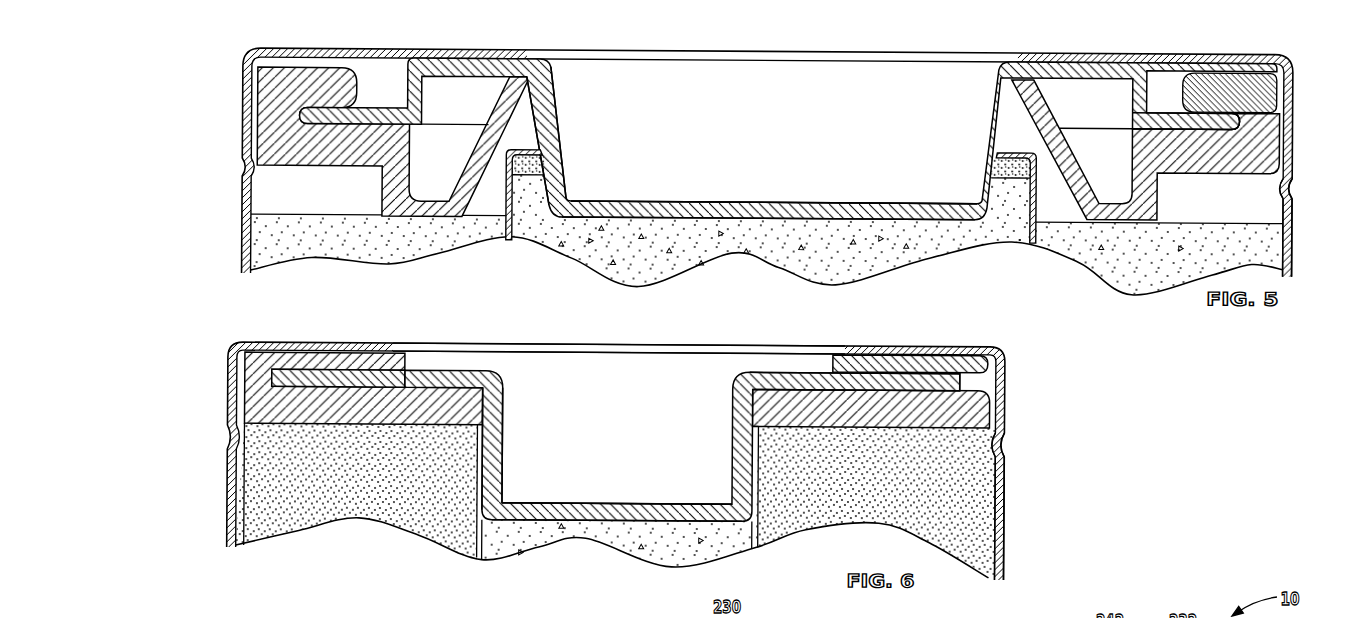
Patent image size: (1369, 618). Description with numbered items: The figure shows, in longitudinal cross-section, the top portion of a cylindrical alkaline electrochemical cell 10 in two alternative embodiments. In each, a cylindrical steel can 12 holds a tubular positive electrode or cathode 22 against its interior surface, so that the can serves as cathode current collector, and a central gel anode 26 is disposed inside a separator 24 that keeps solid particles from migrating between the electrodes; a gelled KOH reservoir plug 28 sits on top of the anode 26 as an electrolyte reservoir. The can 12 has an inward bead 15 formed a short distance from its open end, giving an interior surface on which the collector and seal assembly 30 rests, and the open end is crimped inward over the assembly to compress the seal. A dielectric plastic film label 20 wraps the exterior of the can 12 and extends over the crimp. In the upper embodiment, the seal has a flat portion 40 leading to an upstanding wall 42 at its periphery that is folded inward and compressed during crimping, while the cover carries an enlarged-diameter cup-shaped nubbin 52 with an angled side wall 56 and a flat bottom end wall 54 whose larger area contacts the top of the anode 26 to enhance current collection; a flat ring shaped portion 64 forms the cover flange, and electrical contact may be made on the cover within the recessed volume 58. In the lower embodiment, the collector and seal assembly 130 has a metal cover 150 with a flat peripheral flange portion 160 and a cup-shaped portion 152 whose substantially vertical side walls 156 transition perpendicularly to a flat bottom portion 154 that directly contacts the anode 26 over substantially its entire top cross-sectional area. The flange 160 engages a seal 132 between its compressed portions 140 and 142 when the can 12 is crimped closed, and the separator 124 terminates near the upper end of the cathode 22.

In FIG. 5, the electrochemical cell 10 is at (1135, 38).
In FIG. 6, the electrochemical cell 10 is at (990, 336).
In FIG. 5, the steel can 12 is at (1297, 199).
In FIG. 6, the steel can 12 is at (998, 467).
In FIG. 5, the inward bead 15 is at (1297, 171).
In FIG. 6, the inward bead 15 is at (998, 437).
In FIG. 5, the plastic film label 20 is at (1297, 234).
In FIG. 6, the plastic film label 20 is at (998, 502).
In FIG. 5, the positive electrode (cathode) 22 is at (330, 243).
In FIG. 6, the positive electrode (cathode) 22 is at (337, 512).
In FIG. 5, the separator 24 is at (512, 198).
In FIG. 5, the negative electrode (anode) 26 is at (572, 248).
In FIG. 6, the negative electrode (anode) 26 is at (527, 551).
In FIG. 5, the gelled KOH reservoir plug 28 is at (1010, 168).
In FIG. 5, the collector and seal assembly 30 is at (312, 185).
In FIG. 5, the flat portion of seal 40 is at (1255, 141).
In FIG. 5, the upstanding wall of seal 42 is at (1223, 86).
In FIG. 5, the cup-shaped nubbin 52 is at (568, 80).
In FIG. 5, the flat bottom end wall 54 is at (940, 212).
In FIG. 5, the angled side wall 56 is at (563, 161).
In FIG. 5, the recessed volume 58 is at (766, 138).
In FIG. 6, the recessed volume 58 is at (621, 438).
In FIG. 5, the flat ring shaped portion 64 is at (1240, 102).
In FIG. 6, the separator 124 is at (477, 519).
In FIG. 6, the collector and seal assembly 130 is at (466, 350).
In FIG. 6, the seal 132 is at (988, 395).
In FIG. 6, the compressed portion of seal 140 is at (827, 413).
In FIG. 6, the compressed portion of seal 142 is at (918, 365).
In FIG. 6, the metal cover 150 is at (797, 366).
In FIG. 6, the cup-shaped portion 152 is at (518, 406).
In FIG. 6, the flat bottom portion 154 is at (576, 518).
In FIG. 6, the vertical side walls 156 is at (506, 470).
In FIG. 6, the flat peripheral flange portion 160 is at (337, 377).